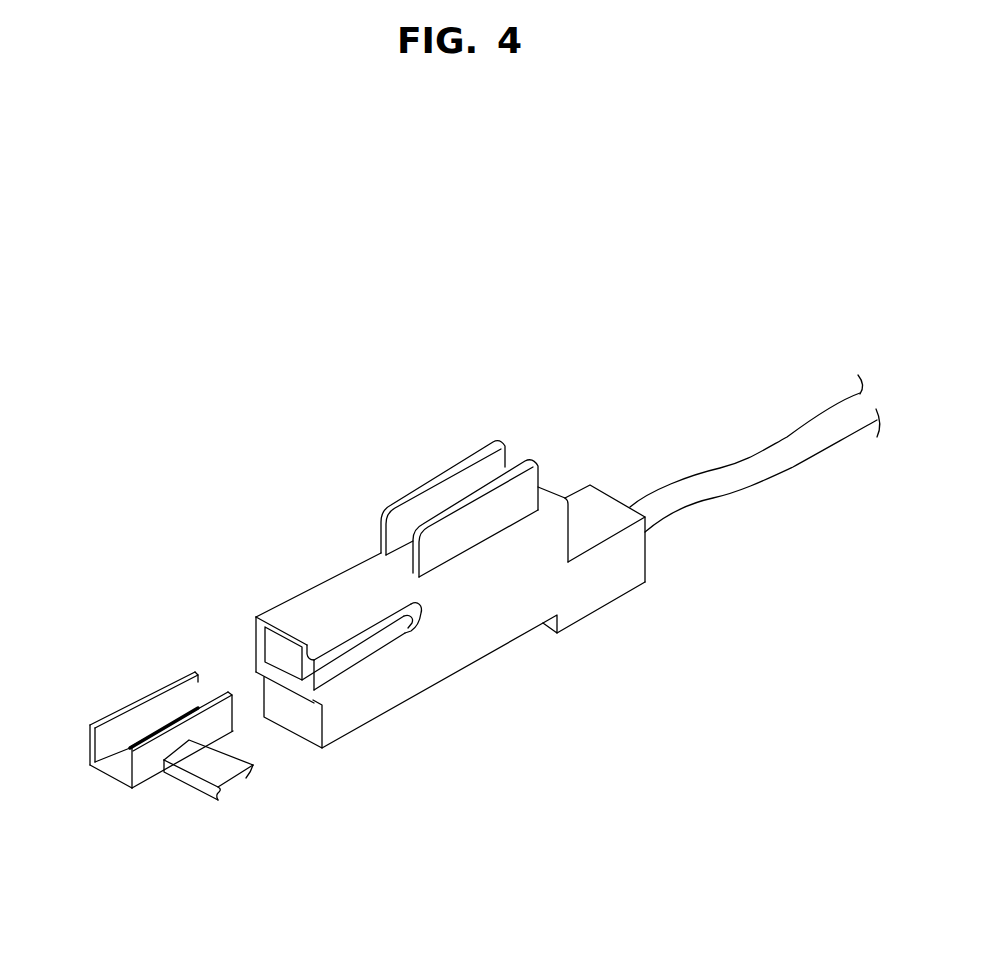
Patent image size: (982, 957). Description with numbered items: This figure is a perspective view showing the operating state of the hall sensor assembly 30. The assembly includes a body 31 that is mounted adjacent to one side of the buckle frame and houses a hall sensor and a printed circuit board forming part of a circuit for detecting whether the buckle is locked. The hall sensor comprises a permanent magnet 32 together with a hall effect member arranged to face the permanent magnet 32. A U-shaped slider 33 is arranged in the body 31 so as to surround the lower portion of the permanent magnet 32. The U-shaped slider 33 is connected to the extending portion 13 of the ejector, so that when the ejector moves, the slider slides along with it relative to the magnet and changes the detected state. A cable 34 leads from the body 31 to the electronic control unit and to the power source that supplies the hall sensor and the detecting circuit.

The hall sensor assembly 30 is at (374, 470).
The body 31 is at (330, 597).
The permanent magnet 32 is at (287, 648).
The U-shaped slider 33 is at (126, 720).
The cable 34 is at (744, 475).
The extending portion 13 is at (215, 764).